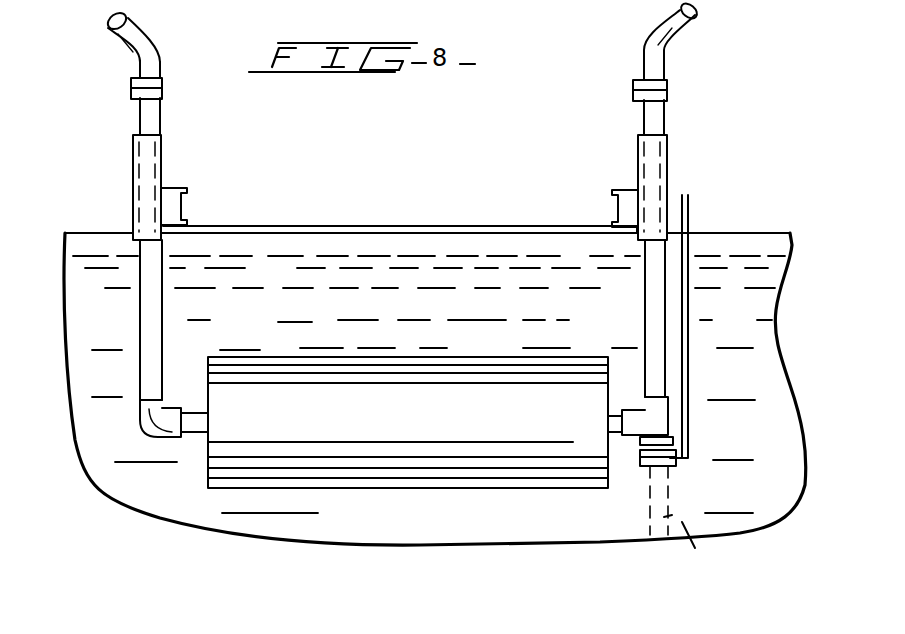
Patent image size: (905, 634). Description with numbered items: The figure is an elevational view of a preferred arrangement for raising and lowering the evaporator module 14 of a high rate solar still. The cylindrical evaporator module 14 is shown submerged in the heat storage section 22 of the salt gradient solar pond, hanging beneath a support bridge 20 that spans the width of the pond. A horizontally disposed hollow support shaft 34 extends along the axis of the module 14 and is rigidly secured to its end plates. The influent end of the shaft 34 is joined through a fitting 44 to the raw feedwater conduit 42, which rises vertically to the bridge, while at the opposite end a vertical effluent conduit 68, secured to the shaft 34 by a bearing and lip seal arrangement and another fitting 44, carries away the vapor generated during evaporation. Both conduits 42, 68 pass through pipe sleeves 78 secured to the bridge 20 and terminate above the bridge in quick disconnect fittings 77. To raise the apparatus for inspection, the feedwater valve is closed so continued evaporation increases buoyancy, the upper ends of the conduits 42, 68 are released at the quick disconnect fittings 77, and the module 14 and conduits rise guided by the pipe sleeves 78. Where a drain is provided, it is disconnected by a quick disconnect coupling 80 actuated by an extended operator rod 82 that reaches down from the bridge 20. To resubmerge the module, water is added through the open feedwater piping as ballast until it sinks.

The evaporator module 14 is at (468, 392).
The support bridge 20 is at (500, 233).
The heat storage section 22 is at (429, 384).
The hollow support shaft 34 is at (194, 421).
The raw feedwater conduit 42 is at (148, 325).
The fitting 44 is at (158, 413).
The vertical effluent conduit 68 is at (657, 317).
The quick disconnect fitting 77 is at (148, 88).
The pipe sleeve 78 is at (147, 160).
The quick disconnect coupling 80 is at (672, 470).
The extended operator rod 82 is at (688, 346).